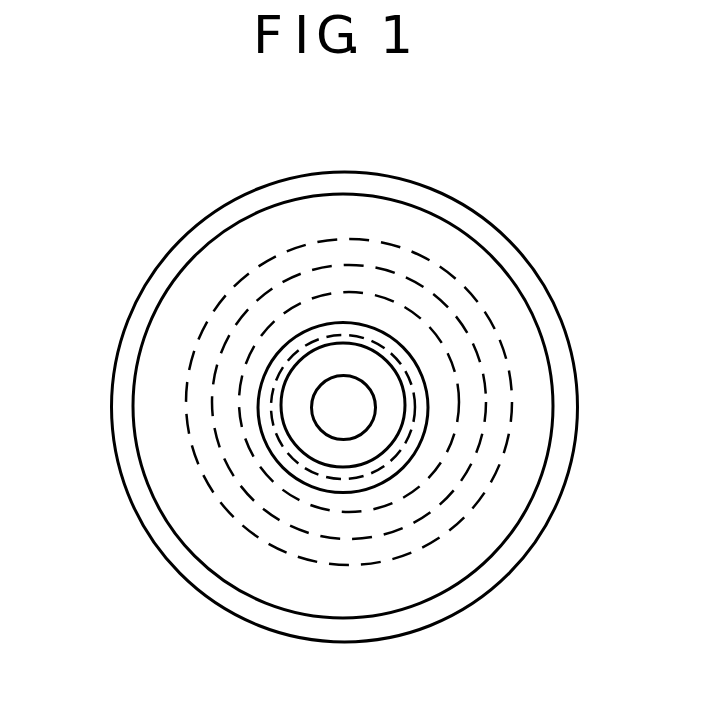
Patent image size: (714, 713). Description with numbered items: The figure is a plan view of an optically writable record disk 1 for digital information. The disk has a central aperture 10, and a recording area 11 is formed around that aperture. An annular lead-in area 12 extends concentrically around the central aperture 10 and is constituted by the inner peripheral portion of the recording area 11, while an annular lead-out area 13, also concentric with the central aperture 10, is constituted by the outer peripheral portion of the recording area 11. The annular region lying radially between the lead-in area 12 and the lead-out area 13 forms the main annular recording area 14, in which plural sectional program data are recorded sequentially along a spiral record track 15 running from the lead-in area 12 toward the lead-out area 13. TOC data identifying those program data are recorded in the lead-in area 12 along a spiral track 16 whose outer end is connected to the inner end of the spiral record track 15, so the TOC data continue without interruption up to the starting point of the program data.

The optically writable record disk 1 is at (567, 202).
The central aperture 10 is at (318, 397).
The recording area 11 is at (197, 310).
The annular lead-in area 12 is at (275, 442).
The annular lead-out area 13 is at (563, 459).
The main annular recording area 14 is at (457, 483).
The spiral record track 15 is at (183, 372).
The spiral track 16 is at (413, 373).